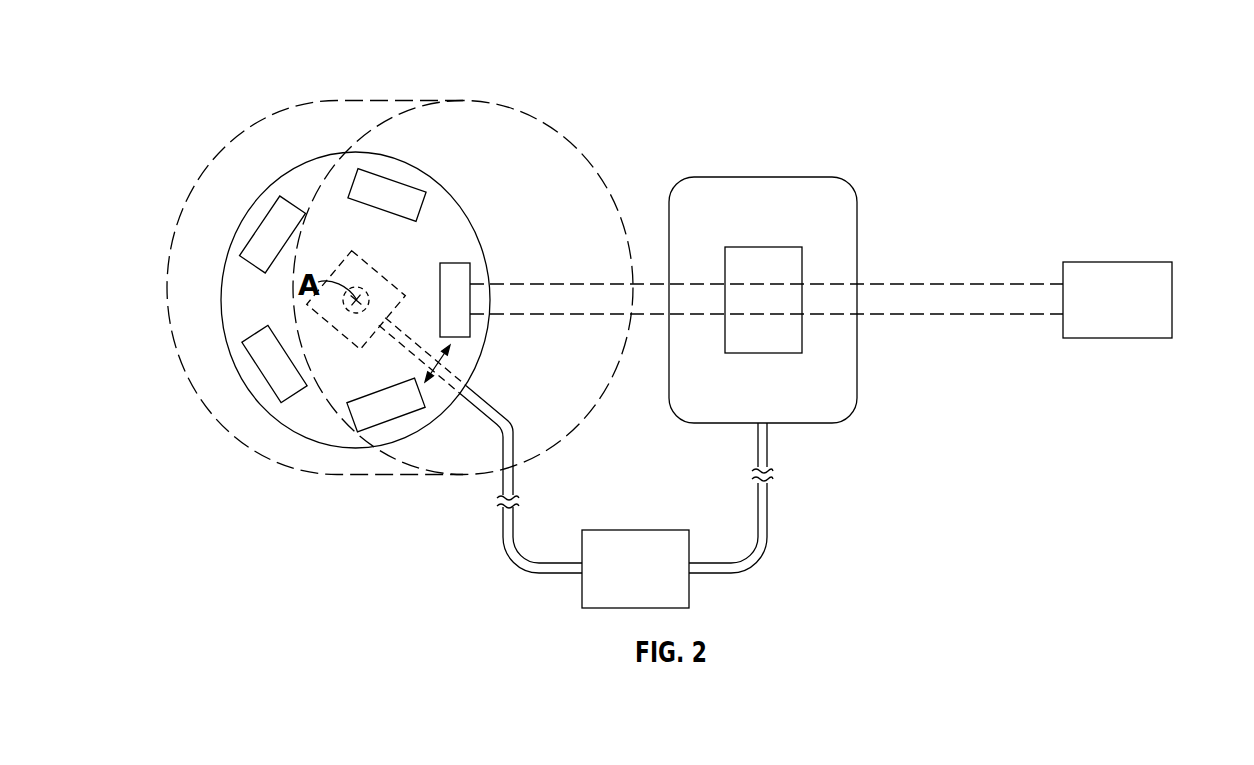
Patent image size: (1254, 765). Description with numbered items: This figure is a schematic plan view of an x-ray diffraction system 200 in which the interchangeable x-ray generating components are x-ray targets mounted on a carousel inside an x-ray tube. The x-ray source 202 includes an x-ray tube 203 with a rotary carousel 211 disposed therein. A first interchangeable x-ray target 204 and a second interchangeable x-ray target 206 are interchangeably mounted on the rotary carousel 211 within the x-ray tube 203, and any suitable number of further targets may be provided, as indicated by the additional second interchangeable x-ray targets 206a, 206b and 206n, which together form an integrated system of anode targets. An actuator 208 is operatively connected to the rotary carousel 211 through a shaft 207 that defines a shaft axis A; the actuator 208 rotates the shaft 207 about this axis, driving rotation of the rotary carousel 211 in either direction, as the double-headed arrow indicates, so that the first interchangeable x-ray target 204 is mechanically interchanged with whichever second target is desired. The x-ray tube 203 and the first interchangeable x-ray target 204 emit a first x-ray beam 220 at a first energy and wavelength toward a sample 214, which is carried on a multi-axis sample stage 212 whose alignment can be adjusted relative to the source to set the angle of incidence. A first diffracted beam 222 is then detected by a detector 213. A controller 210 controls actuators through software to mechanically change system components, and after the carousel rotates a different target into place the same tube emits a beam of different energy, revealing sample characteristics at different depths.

The x-ray diffraction system 200 is at (283, 63).
The x-ray source 202 is at (455, 243).
The x-ray tube 203 is at (527, 117).
The first interchangeable x-ray target 204 is at (455, 278).
The second interchangeable x-ray target 206 is at (387, 407).
The additional second interchangeable x-ray target 206a is at (272, 232).
The additional second interchangeable x-ray target 206b is at (273, 365).
The additional second interchangeable x-ray target 206n is at (387, 193).
The shaft 207 is at (352, 289).
The actuator 208 is at (340, 340).
The controller 210 is at (655, 582).
The rotary carousel 211 is at (220, 303).
The multi-axis sample stage 212 is at (873, 428).
The detector 213 is at (1137, 313).
The sample 214 is at (763, 260).
The first x-ray beam 220 is at (662, 303).
The first diffracted beam 222 is at (941, 284).